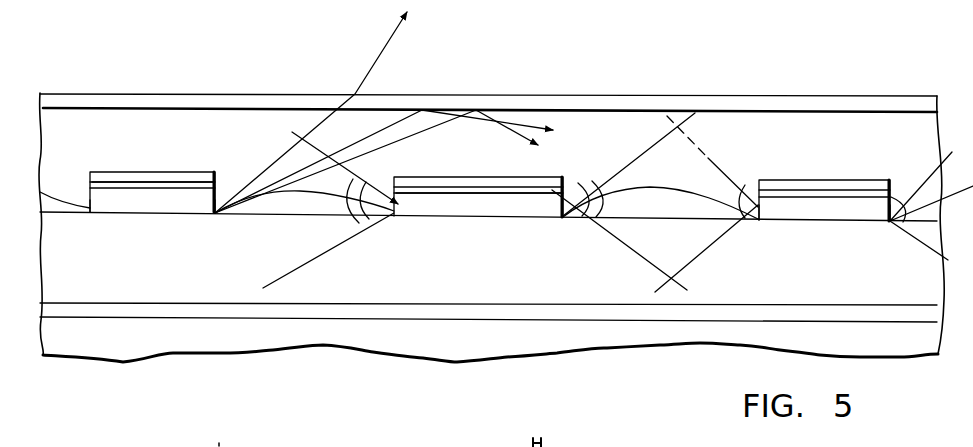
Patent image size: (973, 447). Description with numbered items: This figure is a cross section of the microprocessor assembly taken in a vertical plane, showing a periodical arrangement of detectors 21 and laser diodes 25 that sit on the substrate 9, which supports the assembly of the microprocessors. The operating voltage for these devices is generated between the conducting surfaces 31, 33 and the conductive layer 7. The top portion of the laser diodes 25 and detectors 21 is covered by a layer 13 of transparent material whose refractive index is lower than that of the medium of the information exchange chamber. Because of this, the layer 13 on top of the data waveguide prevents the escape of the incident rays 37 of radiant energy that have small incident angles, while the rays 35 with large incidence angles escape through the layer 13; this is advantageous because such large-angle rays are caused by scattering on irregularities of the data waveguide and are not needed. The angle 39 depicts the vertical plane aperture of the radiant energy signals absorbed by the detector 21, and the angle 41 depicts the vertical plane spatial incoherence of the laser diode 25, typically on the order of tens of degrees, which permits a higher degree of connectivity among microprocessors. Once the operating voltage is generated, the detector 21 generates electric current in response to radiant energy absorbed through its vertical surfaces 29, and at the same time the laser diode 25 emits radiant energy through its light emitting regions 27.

The conductive layer 7 is at (360, 310).
The substrate 9 is at (488, 254).
The layer of transparent material 13 is at (238, 97).
The detector 21 is at (478, 197).
The laser diode 25 is at (490, 196).
The light emitting regions 27 is at (96, 203).
The vertical surfaces 29 is at (401, 208).
The conducting surface 31 is at (178, 187).
The conducting surface 33 is at (493, 196).
The rays with large incidence angles 35 is at (376, 62).
The incident rays 37 is at (521, 121).
The angle of vertical plane aperture 39 is at (344, 210).
The angle of vertical plane spatial incoherence 41 is at (732, 197).